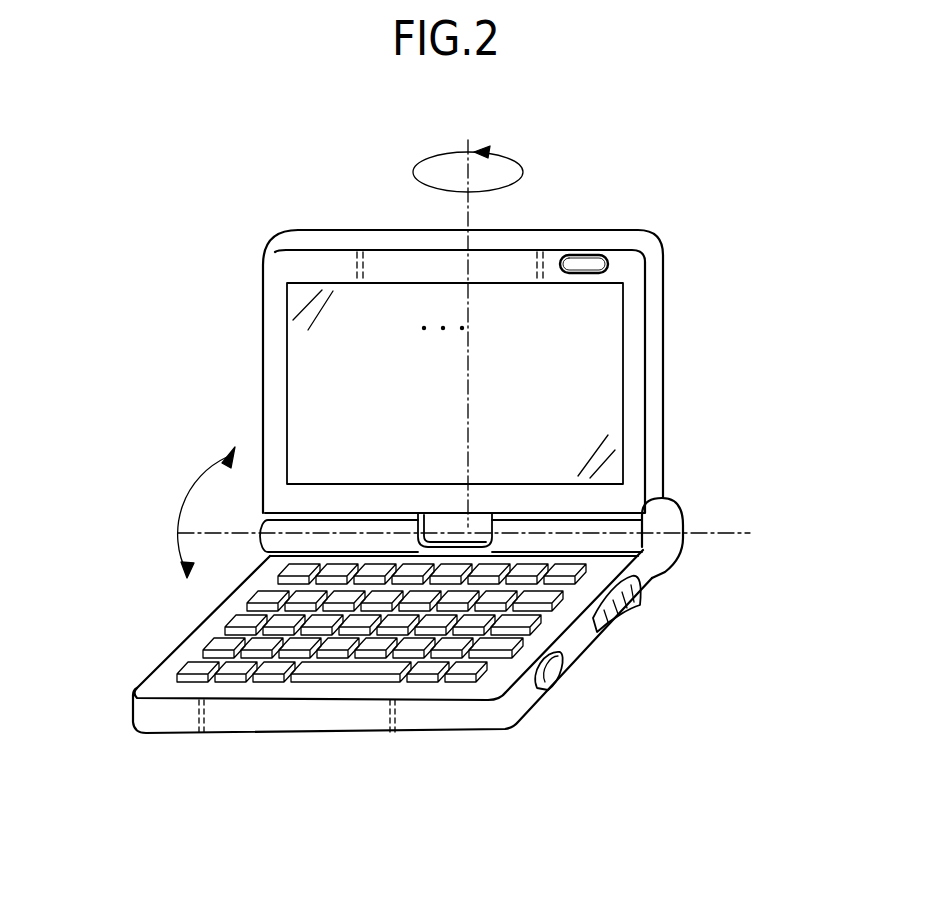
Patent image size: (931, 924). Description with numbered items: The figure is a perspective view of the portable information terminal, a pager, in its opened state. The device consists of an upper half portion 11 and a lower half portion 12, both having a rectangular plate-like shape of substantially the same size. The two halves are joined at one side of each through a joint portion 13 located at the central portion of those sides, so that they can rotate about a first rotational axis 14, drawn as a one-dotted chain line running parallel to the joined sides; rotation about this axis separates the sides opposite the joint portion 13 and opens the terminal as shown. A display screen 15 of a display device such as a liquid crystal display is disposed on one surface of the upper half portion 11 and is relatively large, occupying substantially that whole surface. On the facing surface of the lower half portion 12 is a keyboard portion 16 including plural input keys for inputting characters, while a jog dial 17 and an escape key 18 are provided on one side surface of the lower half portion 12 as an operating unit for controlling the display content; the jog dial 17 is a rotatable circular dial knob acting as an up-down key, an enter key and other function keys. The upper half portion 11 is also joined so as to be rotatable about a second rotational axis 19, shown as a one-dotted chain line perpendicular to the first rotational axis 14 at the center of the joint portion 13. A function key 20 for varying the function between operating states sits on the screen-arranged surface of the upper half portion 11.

The upper half portion 11 is at (274, 342).
The lower half portion 12 is at (520, 702).
The joint portion 13 is at (483, 520).
The first rotational axis 14 is at (735, 535).
The display screen 15 is at (612, 337).
The keyboard portion 16 is at (295, 686).
The jog dial 17 is at (633, 613).
The escape key 18 is at (548, 668).
The second rotational axis 19 is at (474, 207).
The function key 20 is at (585, 262).